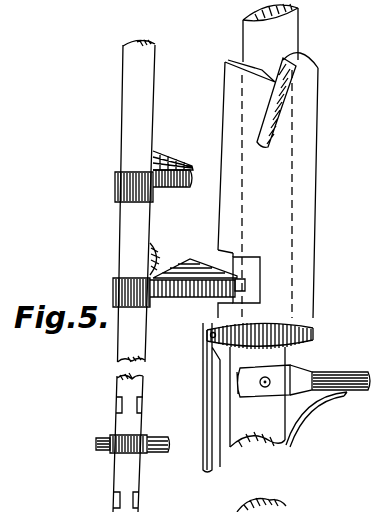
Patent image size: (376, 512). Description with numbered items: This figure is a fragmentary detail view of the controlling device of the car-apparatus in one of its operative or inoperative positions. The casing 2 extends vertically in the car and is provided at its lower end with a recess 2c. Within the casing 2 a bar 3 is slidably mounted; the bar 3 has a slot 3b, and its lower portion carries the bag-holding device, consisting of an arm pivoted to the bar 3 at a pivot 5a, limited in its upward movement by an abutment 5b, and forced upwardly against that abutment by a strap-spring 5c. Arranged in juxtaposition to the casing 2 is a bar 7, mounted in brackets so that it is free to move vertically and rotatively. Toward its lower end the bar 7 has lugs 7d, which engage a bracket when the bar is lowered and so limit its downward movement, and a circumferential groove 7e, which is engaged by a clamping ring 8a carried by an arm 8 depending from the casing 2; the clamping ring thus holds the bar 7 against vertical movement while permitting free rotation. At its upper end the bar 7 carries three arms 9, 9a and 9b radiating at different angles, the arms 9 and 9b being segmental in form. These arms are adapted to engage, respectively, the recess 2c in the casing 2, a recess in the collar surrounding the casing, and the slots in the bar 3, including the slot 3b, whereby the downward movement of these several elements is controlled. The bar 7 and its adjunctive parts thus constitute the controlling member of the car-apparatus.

The casing 2 is at (268, 185).
The recess 2c is at (253, 252).
The bar 3 is at (285, 42).
The slot 3b is at (245, 279).
The pivot 5a is at (265, 388).
The abutment 5b is at (300, 360).
The strap-spring 5c is at (312, 408).
The bar 7 is at (134, 276).
The lugs 7d is at (113, 405).
The circumferential groove 7e is at (110, 497).
The arm 8 is at (157, 437).
The clamping ring 8a is at (105, 451).
The arm 9 is at (173, 158).
The arm 9a is at (160, 257).
The arm 9b is at (186, 294).